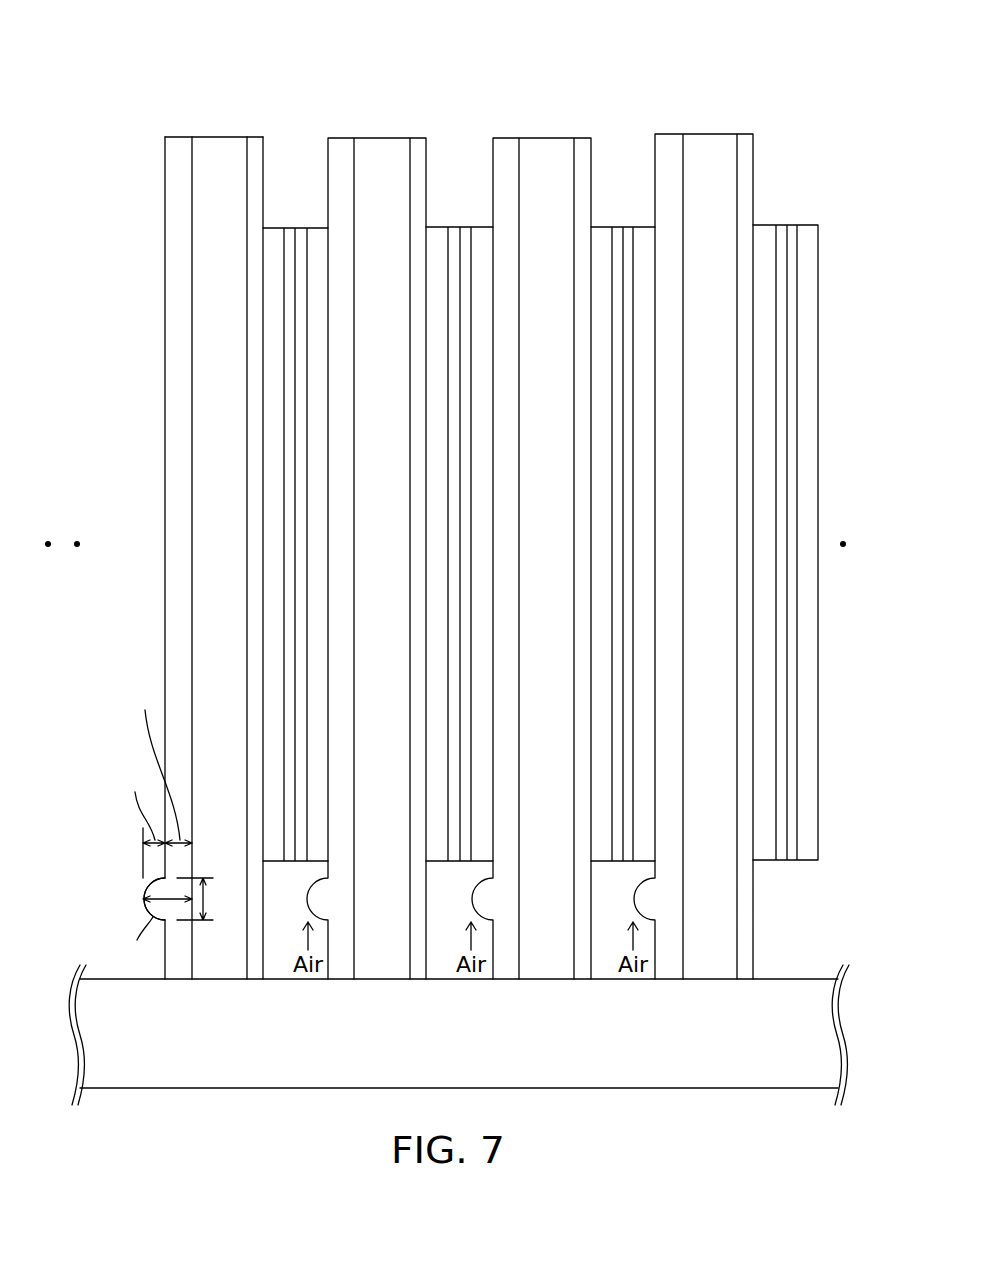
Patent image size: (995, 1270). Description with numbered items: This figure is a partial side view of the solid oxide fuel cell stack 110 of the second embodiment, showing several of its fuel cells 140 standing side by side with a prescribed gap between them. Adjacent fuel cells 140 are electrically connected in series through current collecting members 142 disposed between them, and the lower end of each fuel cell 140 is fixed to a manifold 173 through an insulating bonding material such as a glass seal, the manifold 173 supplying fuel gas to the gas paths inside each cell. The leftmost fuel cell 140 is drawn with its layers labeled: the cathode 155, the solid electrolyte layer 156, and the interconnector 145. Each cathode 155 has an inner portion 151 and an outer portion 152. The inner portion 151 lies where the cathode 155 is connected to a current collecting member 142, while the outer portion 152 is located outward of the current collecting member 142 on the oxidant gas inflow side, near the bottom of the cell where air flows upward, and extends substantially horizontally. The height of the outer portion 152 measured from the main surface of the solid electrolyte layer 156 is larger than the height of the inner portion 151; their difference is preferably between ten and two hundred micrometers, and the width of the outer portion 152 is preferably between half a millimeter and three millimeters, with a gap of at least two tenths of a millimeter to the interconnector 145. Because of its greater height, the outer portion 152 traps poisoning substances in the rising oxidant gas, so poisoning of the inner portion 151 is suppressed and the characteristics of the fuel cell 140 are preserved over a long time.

The solid oxide fuel cell stack 110 is at (570, 75).
The fuel cell 140 is at (226, 492).
The current collecting member 142 is at (300, 232).
The interconnector 145 is at (277, 520).
The inner portion 151 is at (140, 873).
The outer portion 152 is at (140, 878).
The cathode 155 is at (177, 145).
The solid electrolyte layer 156 is at (225, 148).
The manifold 173 is at (785, 1007).